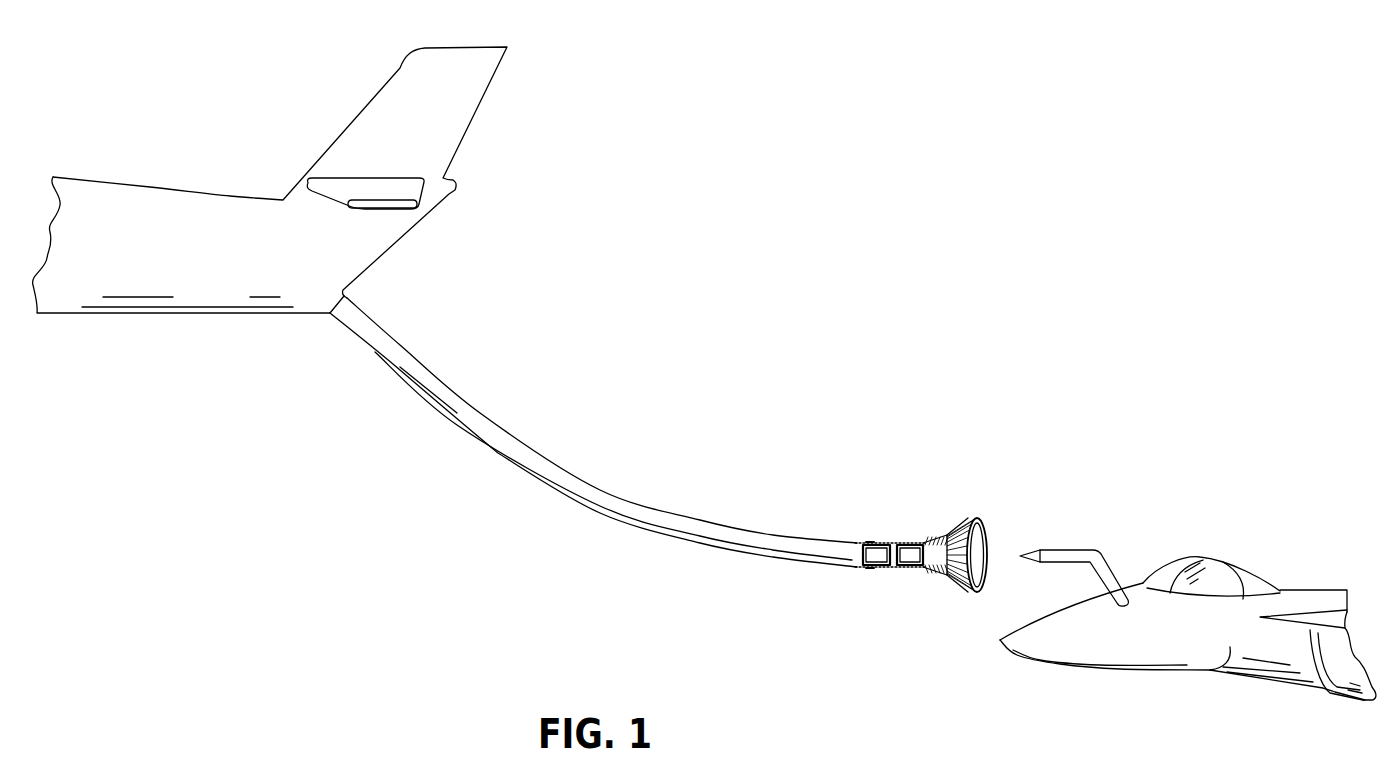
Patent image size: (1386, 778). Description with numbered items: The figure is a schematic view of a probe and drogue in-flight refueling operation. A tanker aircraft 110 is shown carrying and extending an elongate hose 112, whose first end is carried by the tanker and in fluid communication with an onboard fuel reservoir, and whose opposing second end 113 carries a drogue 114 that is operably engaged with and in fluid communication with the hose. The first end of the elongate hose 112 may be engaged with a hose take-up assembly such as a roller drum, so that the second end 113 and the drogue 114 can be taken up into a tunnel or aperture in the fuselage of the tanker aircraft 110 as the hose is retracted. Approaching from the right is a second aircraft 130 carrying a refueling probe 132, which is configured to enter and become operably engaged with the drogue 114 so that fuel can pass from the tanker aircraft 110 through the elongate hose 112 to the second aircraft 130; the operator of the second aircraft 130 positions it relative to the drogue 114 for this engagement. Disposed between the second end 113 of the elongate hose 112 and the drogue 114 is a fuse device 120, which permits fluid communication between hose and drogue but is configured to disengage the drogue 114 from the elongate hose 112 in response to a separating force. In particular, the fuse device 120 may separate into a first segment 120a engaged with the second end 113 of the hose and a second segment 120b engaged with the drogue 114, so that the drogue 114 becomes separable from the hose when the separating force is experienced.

The tanker aircraft 110 is at (225, 303).
The elongate hose 112 is at (498, 453).
The second end 113 is at (850, 561).
The drogue 114 is at (952, 518).
The fuse device 120 is at (894, 555).
The first segment 120a is at (863, 575).
The second segment 120b is at (897, 575).
The second aircraft 130 is at (1188, 609).
The refueling probe 132 is at (1067, 552).